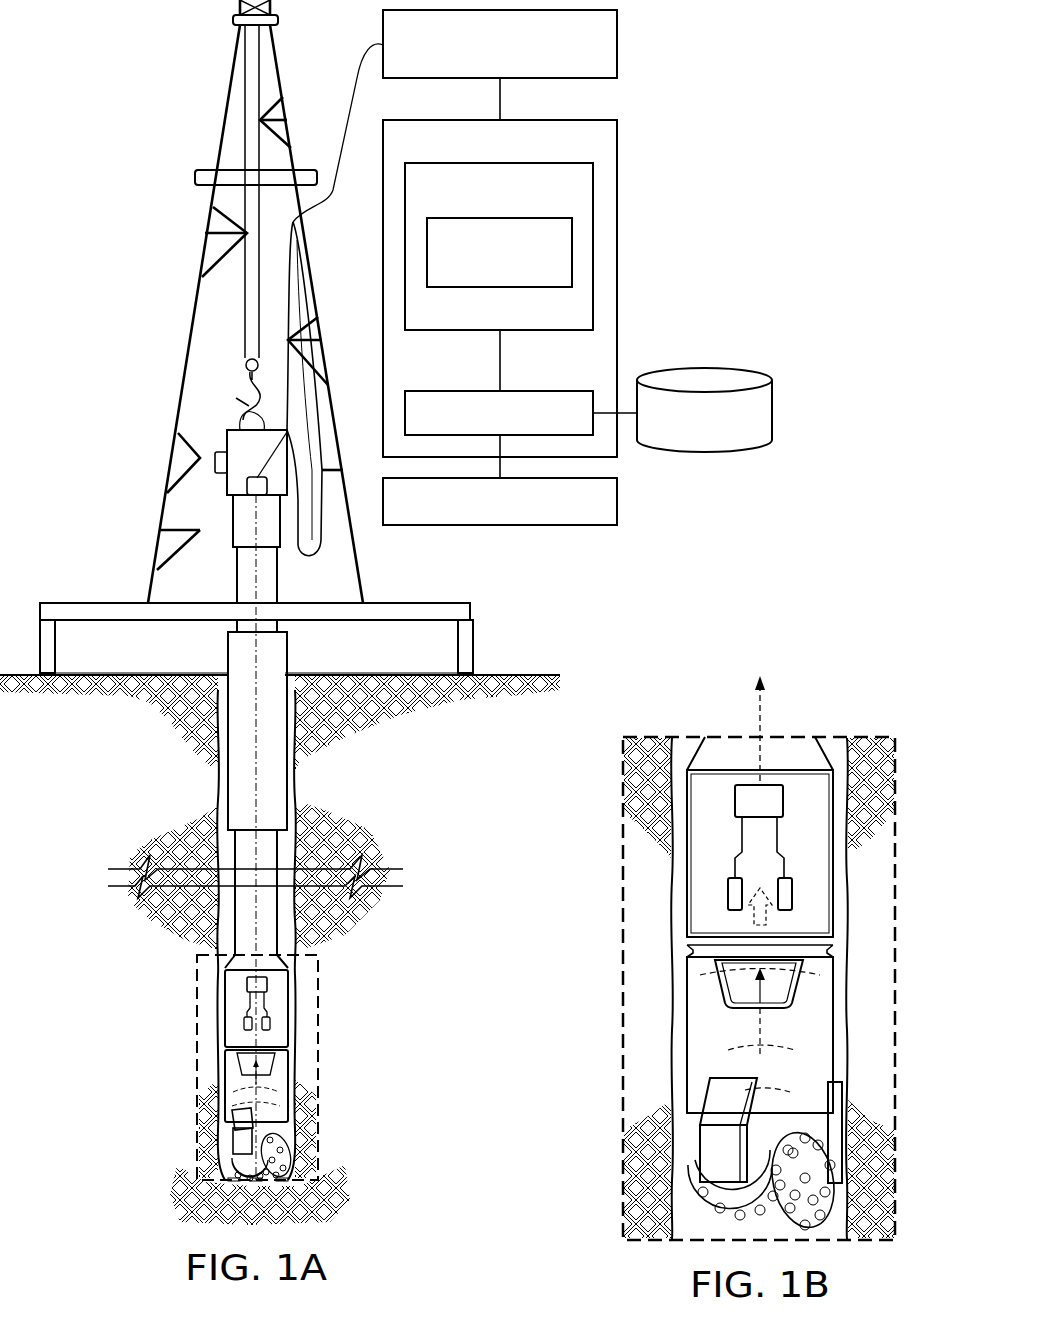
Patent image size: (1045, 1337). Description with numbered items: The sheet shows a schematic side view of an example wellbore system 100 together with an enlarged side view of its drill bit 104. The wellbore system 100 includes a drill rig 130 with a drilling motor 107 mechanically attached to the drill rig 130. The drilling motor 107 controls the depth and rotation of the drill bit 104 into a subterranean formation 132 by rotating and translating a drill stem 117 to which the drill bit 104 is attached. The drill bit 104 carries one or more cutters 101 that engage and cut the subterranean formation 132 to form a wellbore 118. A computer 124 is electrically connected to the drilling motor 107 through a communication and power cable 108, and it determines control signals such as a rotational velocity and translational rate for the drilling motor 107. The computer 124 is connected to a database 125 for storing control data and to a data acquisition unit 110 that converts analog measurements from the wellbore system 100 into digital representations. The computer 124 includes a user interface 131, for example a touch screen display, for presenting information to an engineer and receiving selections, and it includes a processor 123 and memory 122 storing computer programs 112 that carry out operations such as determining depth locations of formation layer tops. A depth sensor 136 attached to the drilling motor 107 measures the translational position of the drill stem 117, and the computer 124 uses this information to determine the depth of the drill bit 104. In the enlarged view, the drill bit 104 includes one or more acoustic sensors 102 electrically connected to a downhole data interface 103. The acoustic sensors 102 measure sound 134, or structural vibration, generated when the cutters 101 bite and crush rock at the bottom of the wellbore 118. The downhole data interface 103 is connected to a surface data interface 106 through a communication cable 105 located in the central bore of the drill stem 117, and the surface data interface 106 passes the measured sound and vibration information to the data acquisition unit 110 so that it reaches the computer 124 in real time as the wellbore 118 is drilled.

In FIG. 1A, the wellbore system 100 is at (86, 64).
In FIG. 1A, the cutters 101 is at (300, 1163).
In FIG. 1B, the cutters 101 is at (703, 1190).
In FIG. 1B, the acoustic sensors 102 is at (788, 877).
In FIG. 1B, the downhole data interface 103 is at (745, 783).
In FIG. 1A, the drill bit 104 is at (218, 1018).
In FIG. 1B, the drill bit 104 is at (687, 888).
In FIG. 1A, the communication cable 105 is at (257, 917).
In FIG. 1A, the surface data interface 106 is at (246, 484).
In FIG. 1A, the drilling motor 107 is at (224, 437).
In FIG. 1A, the communication and power cable 108 is at (335, 278).
In FIG. 1A, the data acquisition unit 110 is at (617, 32).
In FIG. 1A, the computer programs 112 is at (503, 218).
In FIG. 1A, the drill stem 117 is at (280, 845).
In FIG. 1A, the wellbore 118 is at (230, 782).
In FIG. 1A, the memory 122 is at (537, 331).
In FIG. 1A, the processor 123 is at (465, 390).
In FIG. 1A, the computer 124 is at (625, 249).
In FIG. 1A, the database 125 is at (703, 460).
In FIG. 1A, the drill rig 130 is at (220, 134).
In FIG. 1A, the user interface 131 is at (508, 527).
In FIG. 1A, the subterranean formation 132 is at (110, 989).
In FIG. 1B, the sound 134 is at (753, 1047).
In FIG. 1A, the depth sensor 136 is at (215, 453).